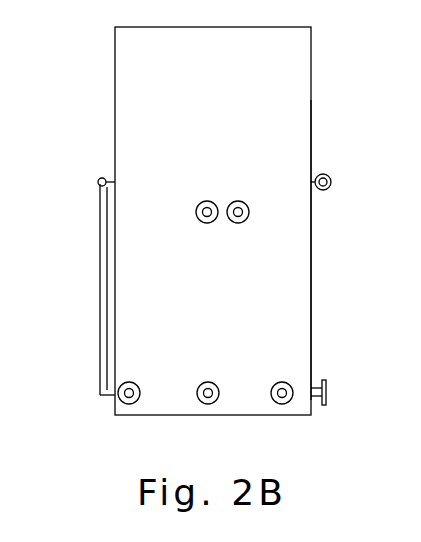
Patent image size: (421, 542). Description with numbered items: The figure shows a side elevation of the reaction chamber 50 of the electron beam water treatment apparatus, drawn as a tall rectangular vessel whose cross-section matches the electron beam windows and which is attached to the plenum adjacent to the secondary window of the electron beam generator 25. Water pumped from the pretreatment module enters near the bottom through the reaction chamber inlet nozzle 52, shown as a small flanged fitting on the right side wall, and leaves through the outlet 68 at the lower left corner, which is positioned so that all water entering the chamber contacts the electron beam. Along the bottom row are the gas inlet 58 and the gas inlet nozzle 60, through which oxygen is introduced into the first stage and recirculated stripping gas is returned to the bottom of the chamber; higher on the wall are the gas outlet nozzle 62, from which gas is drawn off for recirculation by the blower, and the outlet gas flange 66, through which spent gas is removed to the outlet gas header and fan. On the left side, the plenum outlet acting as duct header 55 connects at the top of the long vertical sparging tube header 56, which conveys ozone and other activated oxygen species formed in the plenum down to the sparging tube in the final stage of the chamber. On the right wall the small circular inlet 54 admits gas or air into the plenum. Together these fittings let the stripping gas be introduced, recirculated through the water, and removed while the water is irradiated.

The electron beam generator 25 is at (311, 72).
The reaction chamber 50 is at (311, 296).
The reaction chamber inlet nozzle 52 is at (327, 378).
The inlet 54 is at (326, 174).
The outlet 55 is at (101, 177).
The sparging tube header 56 is at (100, 268).
The gas inlet 58 is at (282, 380).
The gas inlet nozzle 60 is at (208, 380).
The gas outlet nozzle 62 is at (207, 224).
The outlet gas flange 66 is at (243, 222).
The outlet 68 is at (129, 380).